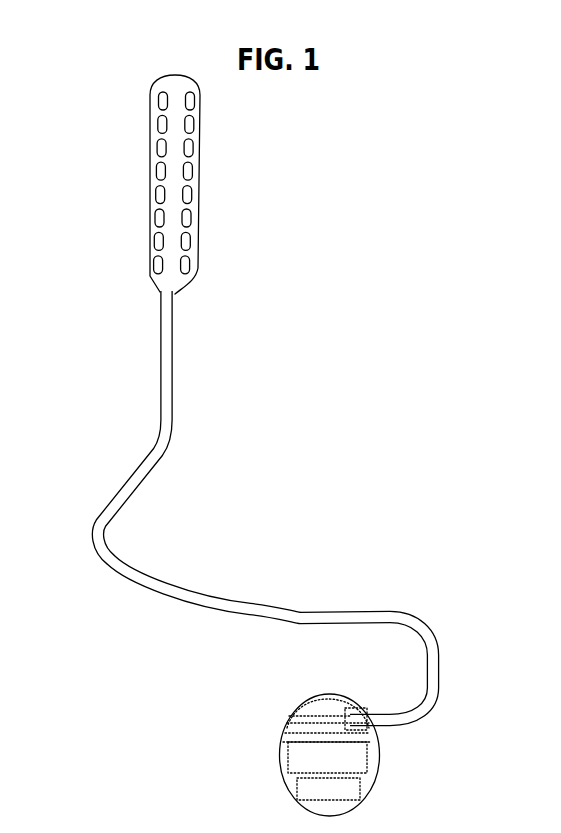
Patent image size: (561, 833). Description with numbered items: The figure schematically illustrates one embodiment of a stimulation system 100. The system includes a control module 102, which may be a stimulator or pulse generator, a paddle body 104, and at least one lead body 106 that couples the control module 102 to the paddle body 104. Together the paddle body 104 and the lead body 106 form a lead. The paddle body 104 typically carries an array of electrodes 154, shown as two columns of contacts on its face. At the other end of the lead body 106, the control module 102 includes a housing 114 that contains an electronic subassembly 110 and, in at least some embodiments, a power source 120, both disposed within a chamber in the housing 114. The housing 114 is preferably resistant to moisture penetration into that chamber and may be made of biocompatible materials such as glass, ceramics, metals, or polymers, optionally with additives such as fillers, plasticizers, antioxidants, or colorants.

The stimulation system 100 is at (363, 264).
The control module 102 is at (282, 736).
The paddle body 104 is at (204, 79).
The lead body 106 is at (173, 388).
The electronic subassembly 110 is at (325, 758).
The housing 114 is at (331, 698).
The power source 120 is at (330, 789).
The electrodes 154 is at (158, 244).